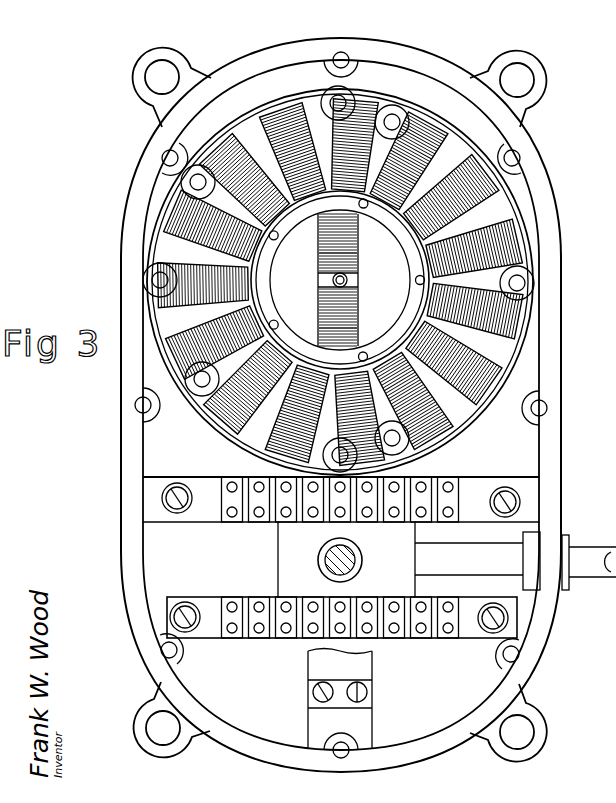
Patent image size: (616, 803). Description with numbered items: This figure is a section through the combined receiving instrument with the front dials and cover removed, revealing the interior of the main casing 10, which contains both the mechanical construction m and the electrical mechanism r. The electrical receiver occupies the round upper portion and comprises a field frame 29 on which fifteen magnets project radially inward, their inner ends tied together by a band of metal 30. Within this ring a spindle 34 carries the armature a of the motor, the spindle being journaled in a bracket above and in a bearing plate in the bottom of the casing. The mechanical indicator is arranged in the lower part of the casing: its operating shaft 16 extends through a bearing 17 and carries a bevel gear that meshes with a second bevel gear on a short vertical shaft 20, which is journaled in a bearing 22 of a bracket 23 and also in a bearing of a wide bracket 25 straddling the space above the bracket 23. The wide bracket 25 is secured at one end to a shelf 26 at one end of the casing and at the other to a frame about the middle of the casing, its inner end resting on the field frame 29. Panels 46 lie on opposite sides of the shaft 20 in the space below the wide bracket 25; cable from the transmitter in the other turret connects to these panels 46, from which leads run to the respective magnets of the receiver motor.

The main casing 10 is at (328, 405).
The mechanical construction m is at (131, 443).
The electrical mechanism r is at (536, 165).
The field frame 29 is at (518, 213).
The band of metal 30 is at (254, 256).
The armature a is at (340, 280).
The spindle 34 is at (348, 280).
The panels 46 is at (275, 510).
The bracket 23 is at (283, 585).
The short vertical shaft 20 is at (353, 546).
The bearing 22 is at (322, 560).
The operating shaft 16 is at (594, 550).
The bearing 17 is at (564, 587).
The wide bracket 25 is at (342, 662).
The shelf 26 is at (365, 718).